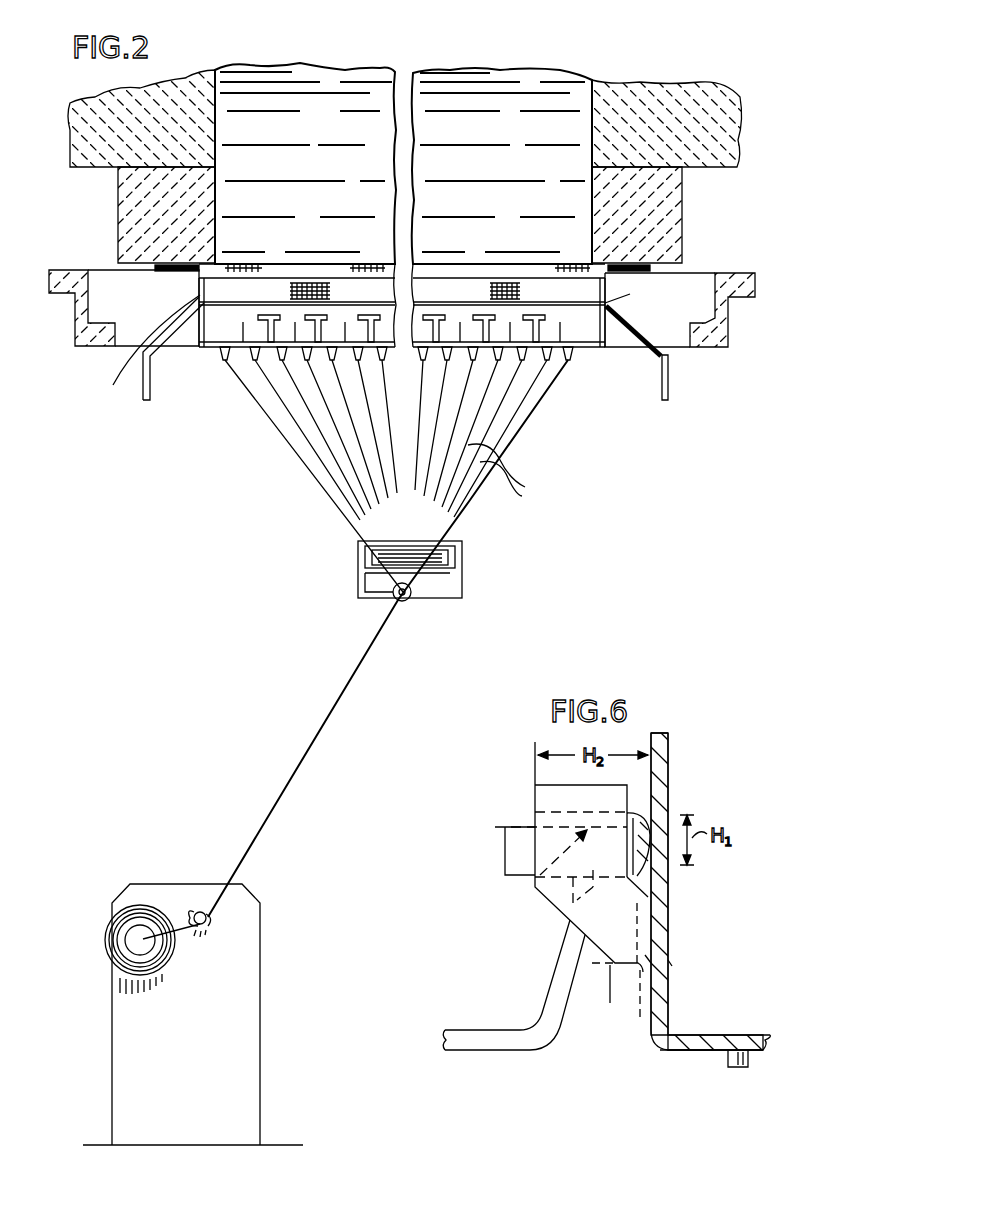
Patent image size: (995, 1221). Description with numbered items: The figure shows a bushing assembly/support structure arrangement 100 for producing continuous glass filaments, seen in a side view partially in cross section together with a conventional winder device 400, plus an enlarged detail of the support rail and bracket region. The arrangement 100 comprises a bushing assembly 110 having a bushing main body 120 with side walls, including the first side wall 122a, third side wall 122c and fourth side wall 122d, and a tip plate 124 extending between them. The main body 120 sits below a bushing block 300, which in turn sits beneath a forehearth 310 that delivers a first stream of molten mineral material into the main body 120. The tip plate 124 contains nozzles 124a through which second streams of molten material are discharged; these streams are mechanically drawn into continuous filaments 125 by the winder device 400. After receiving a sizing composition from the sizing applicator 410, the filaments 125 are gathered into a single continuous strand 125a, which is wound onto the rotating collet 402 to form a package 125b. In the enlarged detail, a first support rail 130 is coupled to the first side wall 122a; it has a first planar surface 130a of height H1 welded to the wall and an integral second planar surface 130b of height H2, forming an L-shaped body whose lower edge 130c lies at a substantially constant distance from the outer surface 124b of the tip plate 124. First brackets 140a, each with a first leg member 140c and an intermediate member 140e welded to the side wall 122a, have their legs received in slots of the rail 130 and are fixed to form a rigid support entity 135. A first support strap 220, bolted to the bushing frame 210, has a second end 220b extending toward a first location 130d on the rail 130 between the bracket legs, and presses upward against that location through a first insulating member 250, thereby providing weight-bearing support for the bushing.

In FIG. 2, the bushing assembly/support structure arrangement 100 is at (178, 463).
In FIG. 2, the bushing assembly 110 is at (586, 379).
In FIG. 2, the bushing main body 120 is at (613, 352).
In FIG. 6, the bushing main body 120 is at (668, 910).
In FIG. 6, the first side wall 122a is at (665, 966).
In FIG. 2, the third side wall 122c is at (138, 365).
In FIG. 2, the fourth side wall 122d is at (605, 303).
In FIG. 2, the tip plate 124 is at (223, 352).
In FIG. 6, the tip plate 124 is at (705, 1050).
In FIG. 2, the nozzles 124a is at (240, 352).
In FIG. 6, the nozzles 124a is at (742, 1068).
In FIG. 6, the outer surface of the tip plate 124b is at (723, 1052).
In FIG. 2, the continuous filaments 125 is at (397, 476).
In FIG. 2, the continuous strand 125a is at (302, 769).
In FIG. 2, the package 125b is at (149, 895).
In FIG. 6, the first support rail 130 is at (645, 808).
In FIG. 6, the first planar surface 130a is at (648, 830).
In FIG. 6, the second planar surface 130b is at (567, 822).
In FIG. 6, the lower edge 130c is at (650, 884).
In FIG. 6, the first location 130d is at (530, 882).
In FIG. 6, the rigid support entity 135 is at (589, 972).
In FIG. 6, the first brackets 140a is at (633, 978).
In FIG. 6, the first leg member 140c is at (555, 890).
In FIG. 6, the intermediate member 140e is at (643, 1003).
In FIG. 2, the bushing frame 210 is at (100, 343).
In FIG. 6, the first support straps 220 is at (480, 1045).
In FIG. 6, the second end of first support strap 220b is at (565, 897).
In FIG. 6, the first insulating member 250 is at (505, 848).
In FIG. 2, the bushing block 300 is at (672, 212).
In FIG. 2, the forehearth 310 is at (705, 100).
In FIG. 2, the winder device 400 is at (273, 914).
In FIG. 2, the rotating collet 402 is at (140, 942).
In FIG. 2, the sizing applicator 410 is at (423, 597).